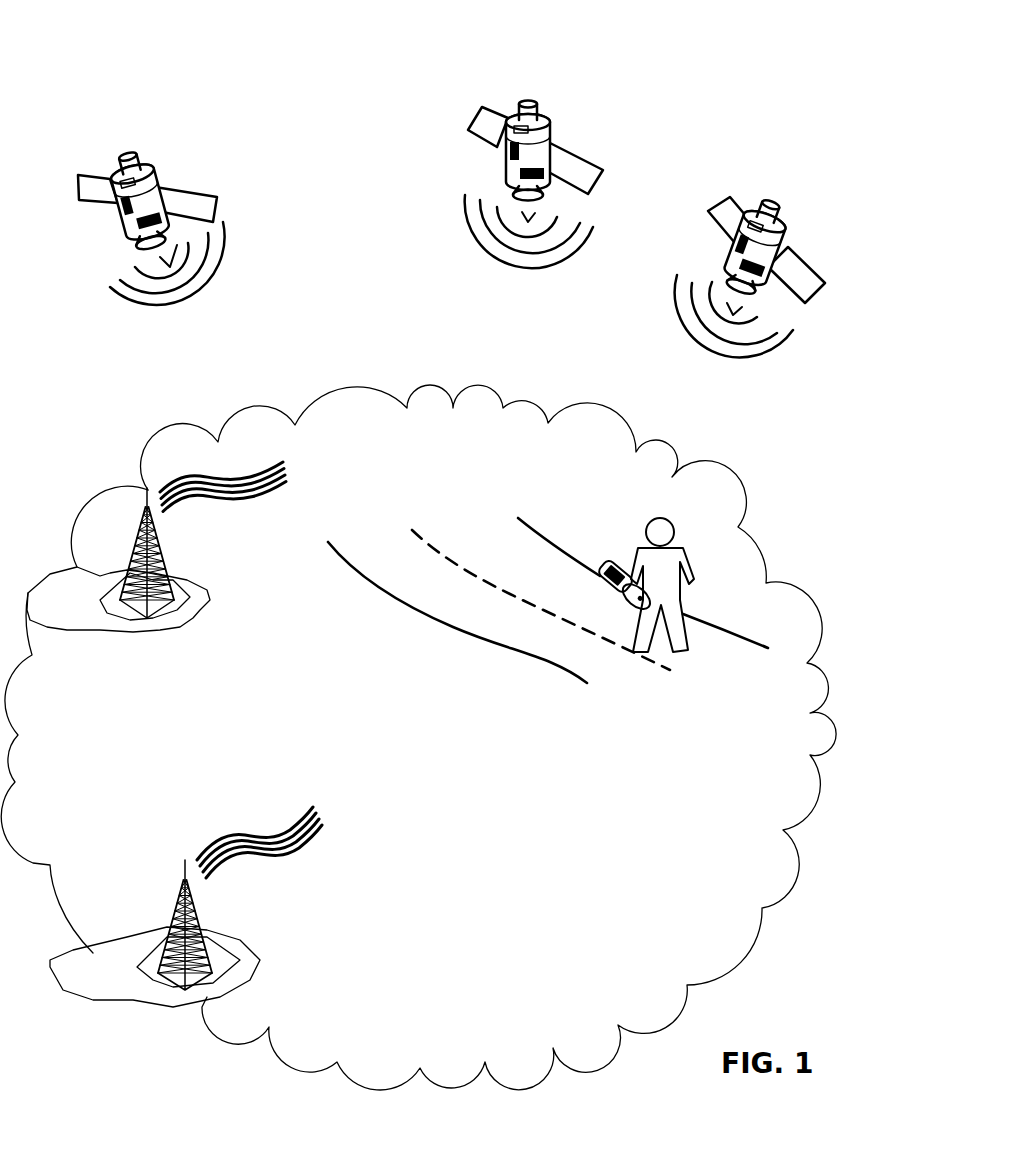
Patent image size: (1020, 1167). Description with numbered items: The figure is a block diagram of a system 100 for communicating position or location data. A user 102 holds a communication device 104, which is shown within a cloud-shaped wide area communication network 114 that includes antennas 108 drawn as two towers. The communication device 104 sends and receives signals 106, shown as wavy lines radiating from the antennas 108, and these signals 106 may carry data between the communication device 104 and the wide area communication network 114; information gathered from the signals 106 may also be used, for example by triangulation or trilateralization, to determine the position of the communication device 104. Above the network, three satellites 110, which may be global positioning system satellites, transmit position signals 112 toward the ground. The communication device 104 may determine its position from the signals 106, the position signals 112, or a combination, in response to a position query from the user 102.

The system 100 is at (718, 64).
The user 102 is at (745, 532).
The communication device 104 is at (623, 563).
The signals 106 is at (250, 465).
The antennas 108 is at (134, 553).
The satellites 110 is at (198, 149).
The position signals 112 is at (263, 310).
The wide area communication network 114 is at (427, 386).